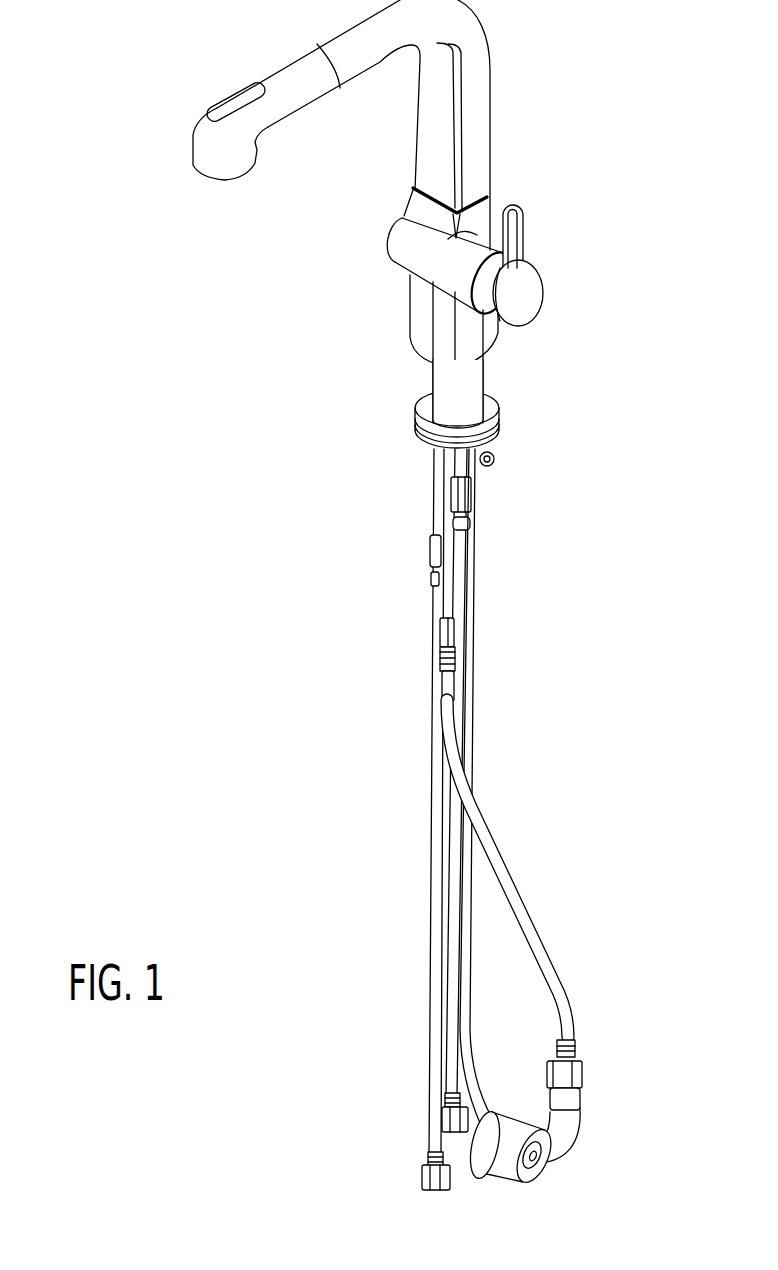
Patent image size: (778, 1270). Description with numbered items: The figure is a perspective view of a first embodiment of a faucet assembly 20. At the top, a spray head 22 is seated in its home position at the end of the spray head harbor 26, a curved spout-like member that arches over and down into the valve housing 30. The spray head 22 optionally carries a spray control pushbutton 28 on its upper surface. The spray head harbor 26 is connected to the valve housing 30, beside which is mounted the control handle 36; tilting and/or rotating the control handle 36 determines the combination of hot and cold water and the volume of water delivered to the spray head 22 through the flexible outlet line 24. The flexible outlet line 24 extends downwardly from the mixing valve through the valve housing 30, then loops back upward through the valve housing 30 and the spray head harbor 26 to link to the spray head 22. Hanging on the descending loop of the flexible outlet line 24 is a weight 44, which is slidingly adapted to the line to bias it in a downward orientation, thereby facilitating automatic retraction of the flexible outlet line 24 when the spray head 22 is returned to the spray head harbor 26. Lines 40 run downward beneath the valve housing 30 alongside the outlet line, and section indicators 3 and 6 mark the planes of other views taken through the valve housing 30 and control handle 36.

The faucet assembly 20 is at (589, 75).
The spray head 22 is at (202, 157).
The flexible outlet line 24 is at (532, 923).
The spray head harbor 26 is at (473, 23).
The spray control pushbutton 28 is at (218, 108).
The valve housing 30 is at (413, 316).
The control handle 36 is at (535, 290).
The water supply lines 40 is at (462, 587).
The weight 44 is at (495, 1163).
The section line 3- 3 is at (385, 227).
The section line 6- 6 is at (542, 192).